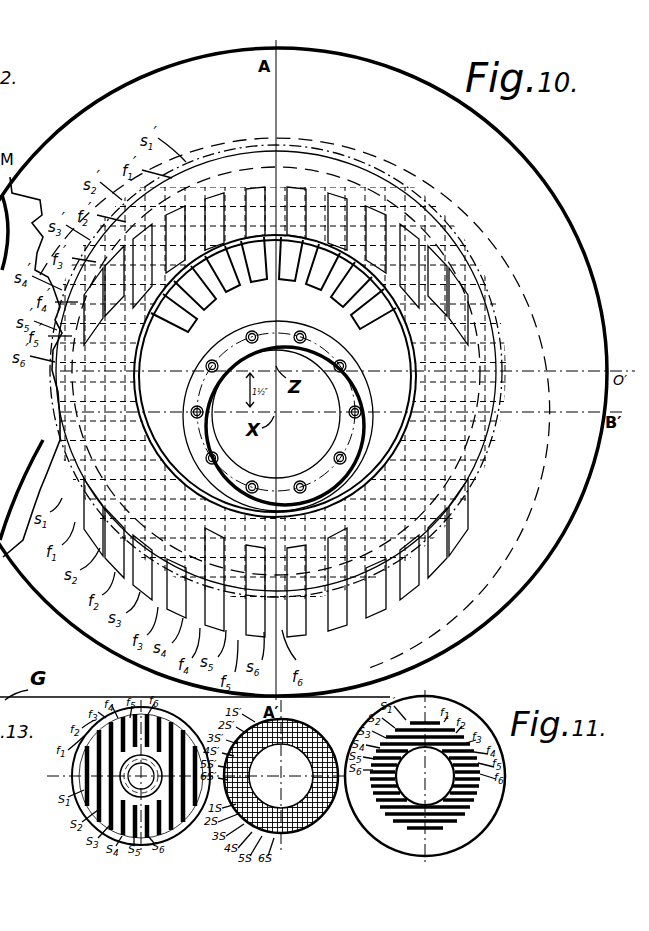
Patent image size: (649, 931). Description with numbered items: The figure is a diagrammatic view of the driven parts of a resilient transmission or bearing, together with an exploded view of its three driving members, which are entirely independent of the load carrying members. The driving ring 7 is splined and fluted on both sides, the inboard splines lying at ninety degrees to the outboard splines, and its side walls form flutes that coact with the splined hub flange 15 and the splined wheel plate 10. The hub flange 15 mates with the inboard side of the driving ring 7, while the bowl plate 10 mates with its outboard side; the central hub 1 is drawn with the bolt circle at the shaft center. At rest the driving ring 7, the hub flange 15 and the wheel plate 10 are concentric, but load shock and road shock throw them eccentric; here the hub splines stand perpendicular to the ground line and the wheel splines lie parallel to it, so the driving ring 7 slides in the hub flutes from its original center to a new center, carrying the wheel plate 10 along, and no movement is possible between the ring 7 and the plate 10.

In FIG. 10, the wheel plate 10 is at (106, 104).
In FIG. 11, the wheel plate 10 is at (486, 830).
In FIG. 10, the driving ring 7 is at (400, 176).
In FIG. 11, the driving ring 7 is at (306, 822).
In FIG. 10, the hub flange 15 is at (195, 306).
In FIG. 11, the hub flange 15 is at (168, 840).
In FIG. 10, the hub with bolt flange 1 is at (322, 346).